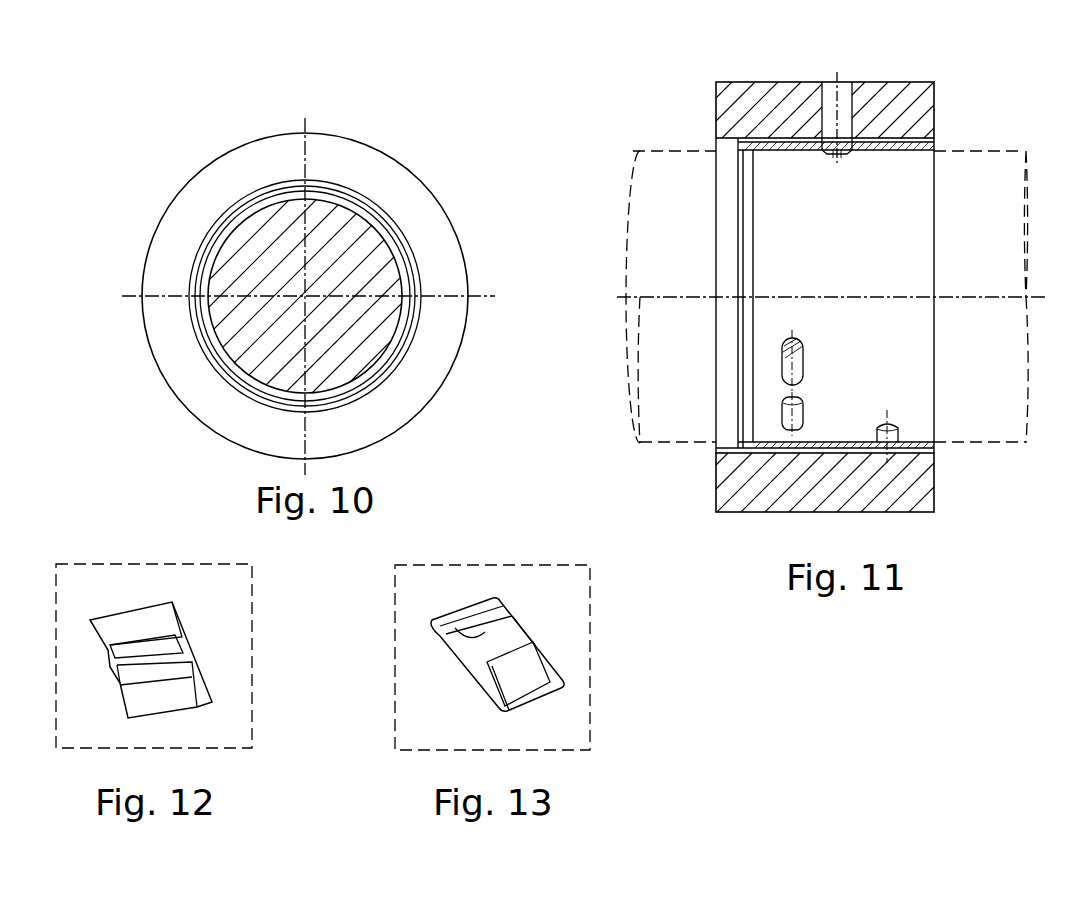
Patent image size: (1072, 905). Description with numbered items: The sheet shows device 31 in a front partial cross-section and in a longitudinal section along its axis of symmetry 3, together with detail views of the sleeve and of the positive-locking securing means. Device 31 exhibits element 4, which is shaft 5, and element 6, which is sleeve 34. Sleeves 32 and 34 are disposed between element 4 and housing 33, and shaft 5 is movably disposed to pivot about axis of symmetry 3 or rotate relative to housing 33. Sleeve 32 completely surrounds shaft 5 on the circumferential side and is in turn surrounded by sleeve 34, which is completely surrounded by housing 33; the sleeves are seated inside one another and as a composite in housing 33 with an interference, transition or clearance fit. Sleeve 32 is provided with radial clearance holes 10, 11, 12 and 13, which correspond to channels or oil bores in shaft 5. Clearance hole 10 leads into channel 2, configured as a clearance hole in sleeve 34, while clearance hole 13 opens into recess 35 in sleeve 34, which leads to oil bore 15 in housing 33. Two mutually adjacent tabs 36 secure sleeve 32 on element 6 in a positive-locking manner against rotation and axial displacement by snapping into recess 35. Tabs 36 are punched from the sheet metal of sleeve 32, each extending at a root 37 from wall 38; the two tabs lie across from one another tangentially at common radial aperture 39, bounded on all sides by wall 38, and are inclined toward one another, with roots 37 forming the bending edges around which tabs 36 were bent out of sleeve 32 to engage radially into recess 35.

In FIG. 11, the channel 2 is at (863, 450).
In FIG. 10, the axis of symmetry 3 is at (313, 272).
In FIG. 11, the axis of symmetry 3 is at (630, 298).
In FIG. 10, the element 4 is at (371, 356).
In FIG. 11, the element 4 is at (657, 447).
In FIG. 10, the shaft 5 is at (354, 370).
In FIG. 11, the shaft 5 is at (647, 447).
In FIG. 10, the element 6 is at (398, 239).
In FIG. 11, the clearance hole 10 is at (885, 423).
In FIG. 11, the clearance hole 11 is at (800, 415).
In FIG. 11, the clearance hole 12 is at (800, 353).
In FIG. 11, the clearance hole 13 is at (843, 150).
In FIG. 11, the oil bore 15 is at (830, 92).
In FIG. 10, the device 31 is at (412, 143).
In FIG. 10, the sleeve 32 is at (408, 340).
In FIG. 11, the sleeve 32 is at (770, 233).
In FIG. 13, the sleeve 32 is at (567, 628).
In FIG. 10, the housing 33 is at (450, 271).
In FIG. 11, the housing 33 is at (895, 103).
In FIG. 10, the sleeve 34 is at (422, 314).
In FIG. 11, the sleeve 34 is at (723, 457).
In FIG. 12, the sleeve 34 is at (107, 588).
In FIG. 11, the recess 35 is at (827, 132).
In FIG. 12, the recess 35 is at (143, 620).
In FIG. 11, the tabs 36 is at (828, 152).
In FIG. 12, the tabs 36 is at (143, 710).
In FIG. 13, the tabs 36 is at (473, 637).
In FIG. 13, the root 37 is at (460, 610).
In FIG. 13, the wall 38 is at (577, 605).
In FIG. 13, the aperture 39 is at (480, 653).